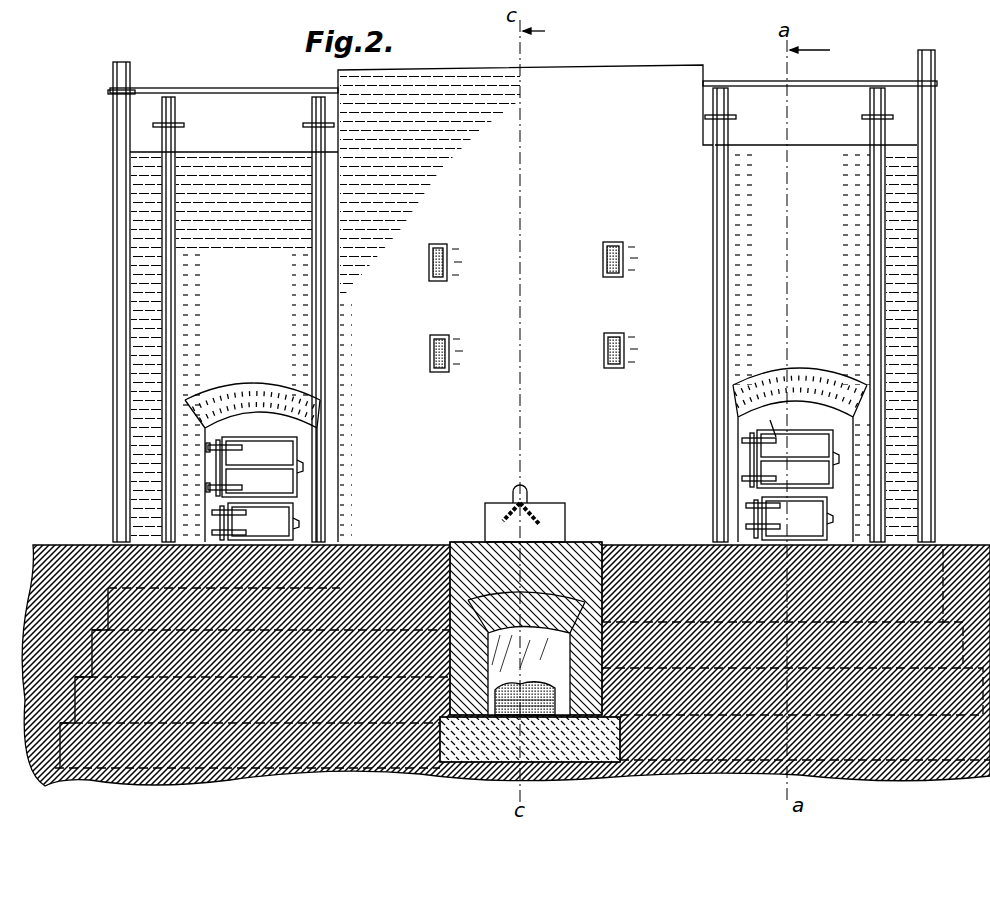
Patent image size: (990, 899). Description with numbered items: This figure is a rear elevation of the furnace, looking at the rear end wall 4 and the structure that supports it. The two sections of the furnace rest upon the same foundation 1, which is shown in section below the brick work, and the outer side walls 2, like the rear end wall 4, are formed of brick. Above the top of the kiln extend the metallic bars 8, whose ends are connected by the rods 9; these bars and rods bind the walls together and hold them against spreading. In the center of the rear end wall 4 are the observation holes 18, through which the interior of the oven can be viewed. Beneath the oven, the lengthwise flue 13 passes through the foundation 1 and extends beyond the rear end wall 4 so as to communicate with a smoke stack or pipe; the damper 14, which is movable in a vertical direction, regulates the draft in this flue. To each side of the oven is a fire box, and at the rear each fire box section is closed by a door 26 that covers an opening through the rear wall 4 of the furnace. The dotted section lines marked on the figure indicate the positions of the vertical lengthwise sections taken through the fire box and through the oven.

The foundation 1 is at (733, 775).
The outer side walls 2 is at (140, 372).
The rear end wall 4 is at (525, 303).
The metallic bars 8 is at (121, 64).
The rods 9 is at (262, 88).
The flue 13 is at (497, 717).
The damper 14 is at (522, 511).
The observation holes 18 is at (447, 265).
The door 26 is at (288, 512).